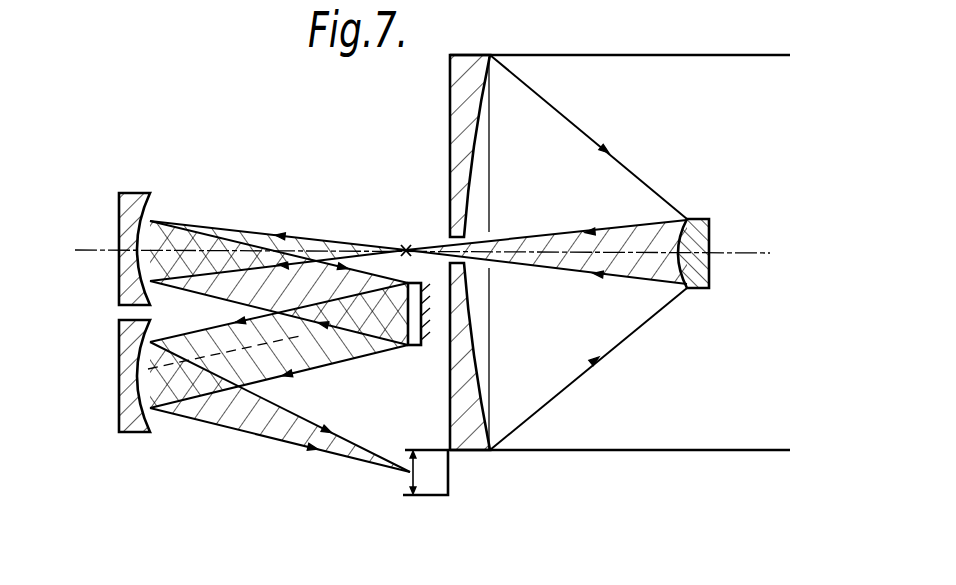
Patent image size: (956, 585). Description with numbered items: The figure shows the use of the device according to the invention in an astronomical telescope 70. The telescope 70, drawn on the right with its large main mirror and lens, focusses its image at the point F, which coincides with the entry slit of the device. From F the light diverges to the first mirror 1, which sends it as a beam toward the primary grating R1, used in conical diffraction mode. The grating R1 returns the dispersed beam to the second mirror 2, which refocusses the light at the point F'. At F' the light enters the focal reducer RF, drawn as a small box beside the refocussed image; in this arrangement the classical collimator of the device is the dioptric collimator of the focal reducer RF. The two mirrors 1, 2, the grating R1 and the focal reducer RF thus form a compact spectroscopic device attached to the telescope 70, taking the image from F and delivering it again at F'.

The first mirror 1 is at (124, 223).
The second mirror 2 is at (123, 410).
The primary grating R1 is at (416, 348).
The telescope focus F is at (406, 234).
The refocussed image point F' is at (280, 430).
The focal reducer RF is at (432, 490).
The astronomical telescope 70 is at (733, 419).